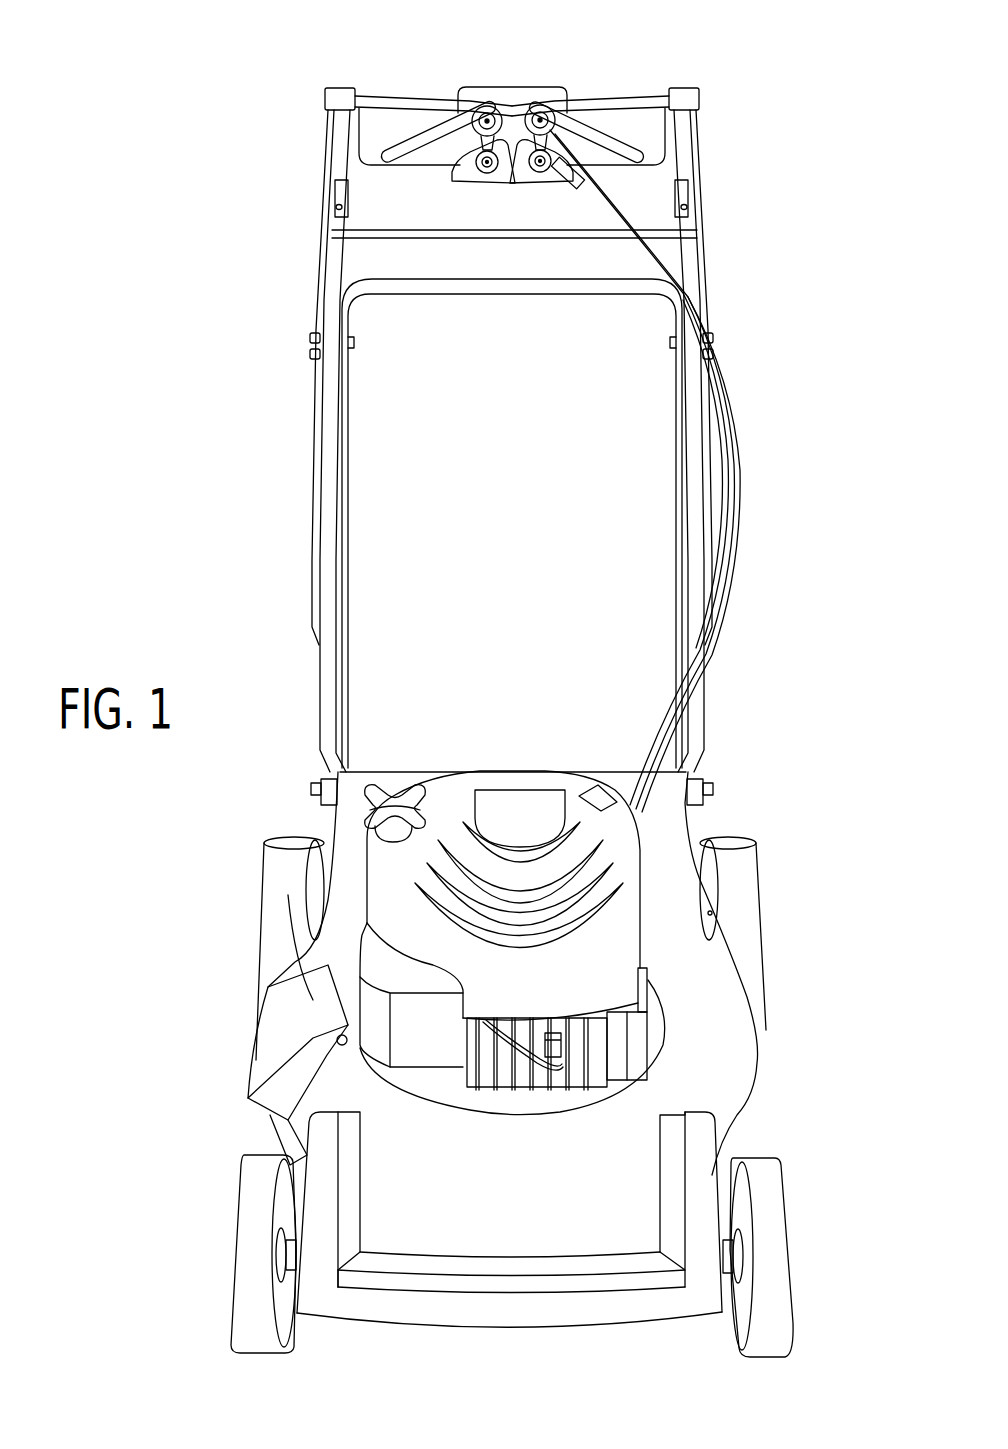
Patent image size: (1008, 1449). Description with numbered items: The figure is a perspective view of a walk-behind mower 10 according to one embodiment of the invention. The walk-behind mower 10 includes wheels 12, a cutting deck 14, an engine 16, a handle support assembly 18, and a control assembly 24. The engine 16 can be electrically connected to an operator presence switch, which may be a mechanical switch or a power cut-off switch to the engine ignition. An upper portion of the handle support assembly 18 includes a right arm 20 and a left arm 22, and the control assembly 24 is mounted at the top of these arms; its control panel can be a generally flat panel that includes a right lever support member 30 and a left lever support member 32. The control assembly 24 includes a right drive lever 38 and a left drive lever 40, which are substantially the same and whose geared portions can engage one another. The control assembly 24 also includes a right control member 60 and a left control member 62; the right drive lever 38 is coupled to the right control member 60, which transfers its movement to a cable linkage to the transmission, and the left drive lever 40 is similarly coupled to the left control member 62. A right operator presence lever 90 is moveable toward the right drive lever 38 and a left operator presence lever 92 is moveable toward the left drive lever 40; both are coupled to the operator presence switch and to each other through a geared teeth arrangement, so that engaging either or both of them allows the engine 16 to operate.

The walk-behind mower 10 is at (762, 712).
The wheels 12 is at (281, 881).
The cutting deck 14 is at (737, 1075).
The engine 16 is at (620, 1047).
The handle support assembly 18 is at (693, 405).
The right arm 20 is at (333, 267).
The left arm 22 is at (687, 270).
The control assembly 24 is at (792, 157).
The right lever support member 30 is at (340, 92).
The left lever support member 32 is at (692, 97).
The right drive lever 38 is at (413, 100).
The left drive lever 40 is at (587, 95).
The right control member 60 is at (472, 173).
The left control member 62 is at (545, 173).
The right operator presence lever 90 is at (420, 137).
The left operator presence lever 92 is at (625, 143).